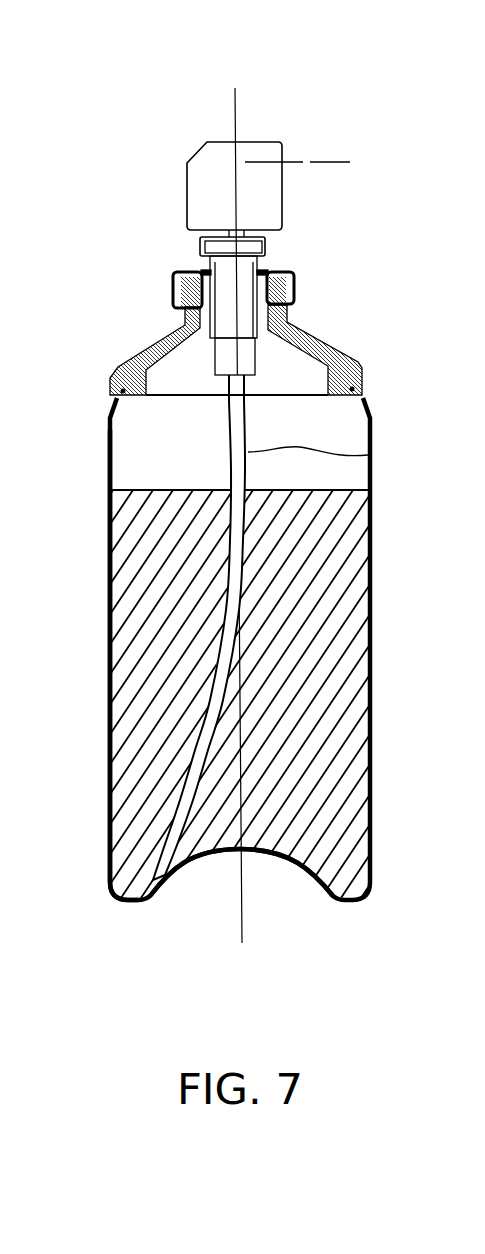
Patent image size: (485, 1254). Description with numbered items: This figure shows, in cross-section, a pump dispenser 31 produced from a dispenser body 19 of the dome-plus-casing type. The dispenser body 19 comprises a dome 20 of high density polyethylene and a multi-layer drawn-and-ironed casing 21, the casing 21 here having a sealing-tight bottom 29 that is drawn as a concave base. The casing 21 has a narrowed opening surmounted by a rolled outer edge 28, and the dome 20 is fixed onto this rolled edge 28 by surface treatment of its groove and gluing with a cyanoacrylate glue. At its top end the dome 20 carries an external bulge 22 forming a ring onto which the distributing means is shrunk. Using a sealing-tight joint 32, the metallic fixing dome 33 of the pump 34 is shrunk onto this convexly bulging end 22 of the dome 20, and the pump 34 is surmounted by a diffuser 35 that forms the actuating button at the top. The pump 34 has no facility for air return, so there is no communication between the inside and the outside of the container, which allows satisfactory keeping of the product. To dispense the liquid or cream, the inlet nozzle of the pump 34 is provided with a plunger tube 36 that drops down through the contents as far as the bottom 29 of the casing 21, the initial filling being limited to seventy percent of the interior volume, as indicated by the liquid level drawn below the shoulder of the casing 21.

The dispenser body 19 is at (98, 674).
The dome 20 is at (323, 345).
The casing 21 is at (110, 818).
The external bulge 22 is at (178, 293).
The outer edge 28 is at (9, 290).
The bottom 29 is at (287, 870).
The pump dispenser 31 is at (93, 494).
The sealing-tight joint 32 is at (272, 256).
The metallic fixing dome 33 is at (300, 274).
The pump 34 is at (222, 290).
The diffuser 35 is at (206, 180).
The plunger tube 36 is at (372, 455).